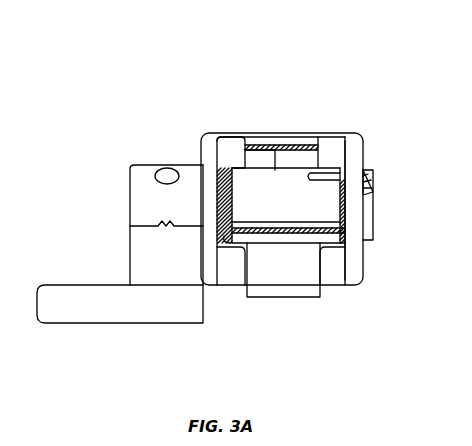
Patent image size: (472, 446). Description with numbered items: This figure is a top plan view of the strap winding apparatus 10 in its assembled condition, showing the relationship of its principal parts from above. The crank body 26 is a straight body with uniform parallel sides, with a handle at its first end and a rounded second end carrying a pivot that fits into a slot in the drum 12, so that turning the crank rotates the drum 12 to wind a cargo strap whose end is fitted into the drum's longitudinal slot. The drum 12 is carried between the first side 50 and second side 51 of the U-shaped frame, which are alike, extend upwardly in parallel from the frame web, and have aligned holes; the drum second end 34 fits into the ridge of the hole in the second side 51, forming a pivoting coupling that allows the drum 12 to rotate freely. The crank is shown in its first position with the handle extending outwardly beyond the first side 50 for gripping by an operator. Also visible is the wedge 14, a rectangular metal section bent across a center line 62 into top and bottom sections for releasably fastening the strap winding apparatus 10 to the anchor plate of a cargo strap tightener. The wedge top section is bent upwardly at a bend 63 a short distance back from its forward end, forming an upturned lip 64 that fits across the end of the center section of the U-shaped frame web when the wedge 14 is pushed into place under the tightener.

The strap winding apparatus 10 is at (333, 97).
The drum 12 is at (290, 246).
The wedge 14 is at (289, 145).
The crank body 26 is at (178, 262).
The drum second end 34 is at (374, 204).
The first side 50 is at (194, 149).
The second side 51 is at (364, 162).
The center line 62 is at (282, 297).
The bend 63 is at (254, 166).
The upturned lip 64 is at (273, 180).